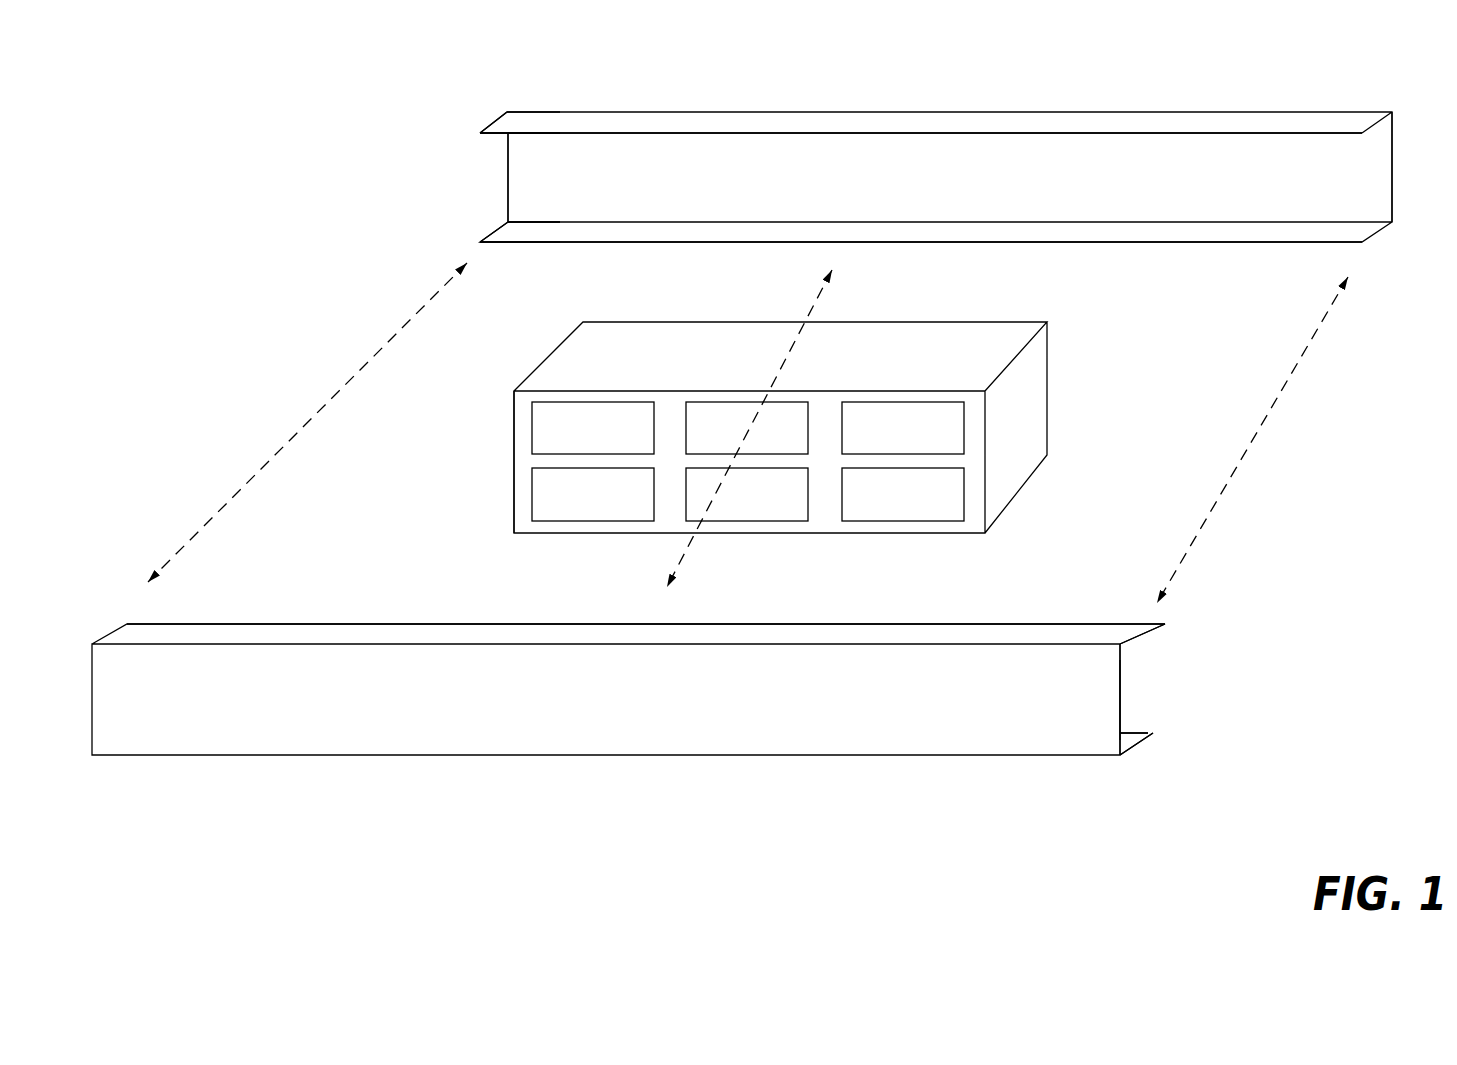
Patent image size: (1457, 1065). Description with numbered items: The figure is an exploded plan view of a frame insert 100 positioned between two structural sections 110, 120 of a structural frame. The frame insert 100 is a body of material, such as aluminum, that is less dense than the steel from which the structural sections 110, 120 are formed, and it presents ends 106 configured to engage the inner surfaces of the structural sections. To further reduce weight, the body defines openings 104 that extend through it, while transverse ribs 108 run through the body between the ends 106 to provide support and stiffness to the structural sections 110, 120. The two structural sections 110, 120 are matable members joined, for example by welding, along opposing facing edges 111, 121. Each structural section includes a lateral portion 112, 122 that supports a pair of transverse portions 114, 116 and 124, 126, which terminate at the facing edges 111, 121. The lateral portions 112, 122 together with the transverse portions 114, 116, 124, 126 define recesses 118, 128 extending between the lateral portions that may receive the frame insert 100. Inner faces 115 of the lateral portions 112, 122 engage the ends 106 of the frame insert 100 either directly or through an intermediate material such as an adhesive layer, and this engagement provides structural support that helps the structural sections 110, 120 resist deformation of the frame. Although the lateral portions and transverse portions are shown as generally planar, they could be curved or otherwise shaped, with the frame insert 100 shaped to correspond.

The frame insert 100 is at (528, 362).
The openings 104 is at (936, 500).
The ends 106 is at (525, 478).
The transverse ribs 108 is at (673, 506).
The structural section 110 is at (898, 112).
The facing edges 111 is at (497, 131).
The lateral portion 112 is at (507, 190).
The transverse portion 114 is at (487, 129).
The inner faces 115 is at (1374, 165).
The transverse portion 116 is at (493, 225).
The recess 118 is at (533, 206).
The structural section 120 is at (635, 757).
The facing edges 121 is at (1039, 612).
The lateral portion 122 is at (1122, 672).
The transverse portion 124 is at (1157, 622).
The transverse portion 126 is at (1149, 740).
The recess 128 is at (1143, 697).